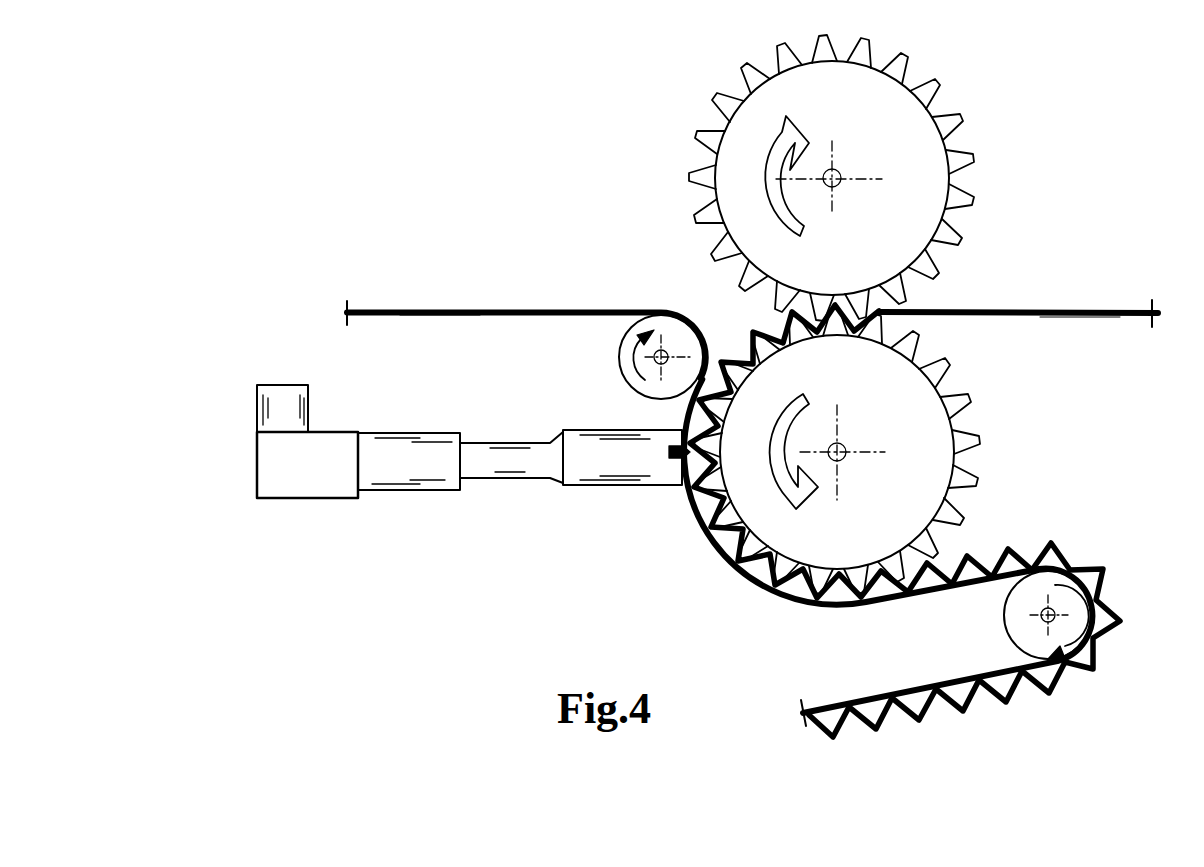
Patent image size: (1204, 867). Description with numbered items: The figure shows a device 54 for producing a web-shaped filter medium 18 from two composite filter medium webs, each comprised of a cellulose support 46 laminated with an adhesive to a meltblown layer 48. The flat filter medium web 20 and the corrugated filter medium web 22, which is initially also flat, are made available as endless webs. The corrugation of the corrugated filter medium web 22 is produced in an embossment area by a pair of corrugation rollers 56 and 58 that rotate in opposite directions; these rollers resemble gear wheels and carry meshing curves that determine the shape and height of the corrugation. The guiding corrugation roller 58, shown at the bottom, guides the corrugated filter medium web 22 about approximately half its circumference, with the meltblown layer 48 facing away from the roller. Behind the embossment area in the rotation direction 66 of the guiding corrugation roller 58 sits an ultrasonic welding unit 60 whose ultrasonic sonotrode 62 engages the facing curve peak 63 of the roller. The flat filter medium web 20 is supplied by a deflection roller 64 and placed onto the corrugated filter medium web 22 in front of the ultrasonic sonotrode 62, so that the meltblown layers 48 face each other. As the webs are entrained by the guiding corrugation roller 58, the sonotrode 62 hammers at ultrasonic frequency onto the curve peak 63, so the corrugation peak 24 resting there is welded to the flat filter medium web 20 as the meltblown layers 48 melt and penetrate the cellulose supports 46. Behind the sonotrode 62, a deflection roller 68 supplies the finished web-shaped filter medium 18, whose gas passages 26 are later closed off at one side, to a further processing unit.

The web-shaped filter medium 18 is at (788, 725).
The flat filter medium web 20 is at (333, 313).
The corrugated filter medium web 22 is at (1012, 545).
The corrugation peak 24 is at (680, 451).
The gas passages 26 is at (1065, 548).
The cellulose support 46 is at (440, 318).
The meltblown layer 48 is at (492, 308).
The device 54 is at (428, 210).
The corrugation roller 56 is at (895, 108).
The guiding corrugation roller 58 is at (932, 427).
The ultrasonic welding unit 60 is at (514, 497).
The ultrasonic sonotrode 62 is at (598, 468).
The curve peak 63 is at (688, 451).
The deflection roller 64 is at (626, 352).
The rotation direction 66 is at (795, 420).
The deflection roller 68 is at (1012, 618).